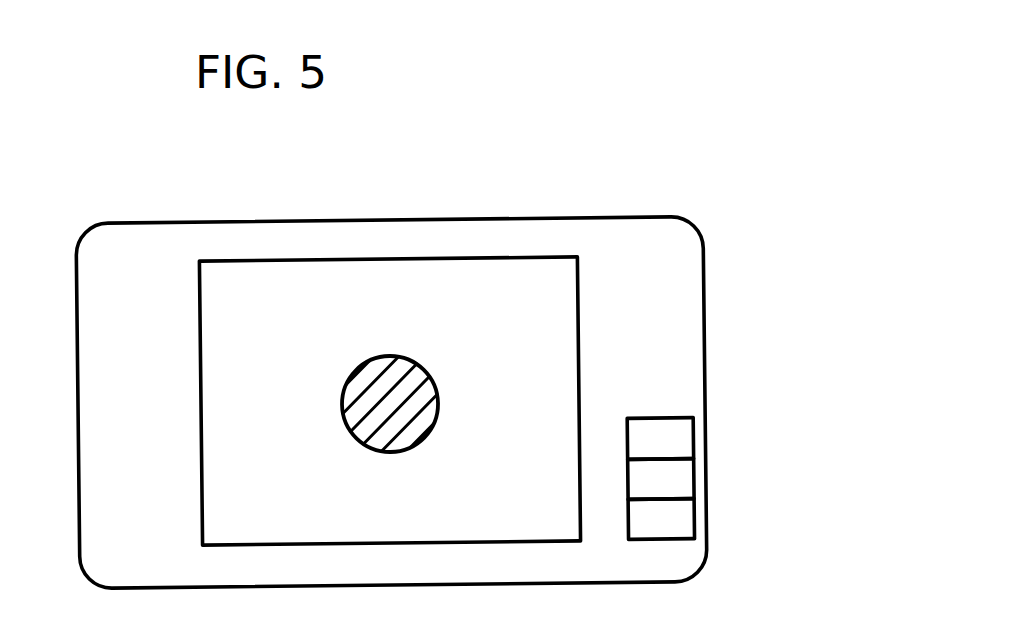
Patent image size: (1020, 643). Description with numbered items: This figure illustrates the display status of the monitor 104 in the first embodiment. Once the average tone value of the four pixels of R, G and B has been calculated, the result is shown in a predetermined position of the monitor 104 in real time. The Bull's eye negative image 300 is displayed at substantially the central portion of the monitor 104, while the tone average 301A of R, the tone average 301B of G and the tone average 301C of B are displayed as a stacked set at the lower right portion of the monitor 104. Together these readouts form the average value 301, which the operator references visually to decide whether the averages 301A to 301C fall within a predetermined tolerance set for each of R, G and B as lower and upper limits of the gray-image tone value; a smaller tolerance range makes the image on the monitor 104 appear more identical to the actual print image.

The monitor 104 is at (636, 216).
The Bull's eye negative image 300 is at (510, 258).
The average value 301 is at (771, 468).
The tone average of R 301A is at (693, 441).
The tone average of G 301B is at (693, 477).
The tone average of B 301C is at (693, 518).